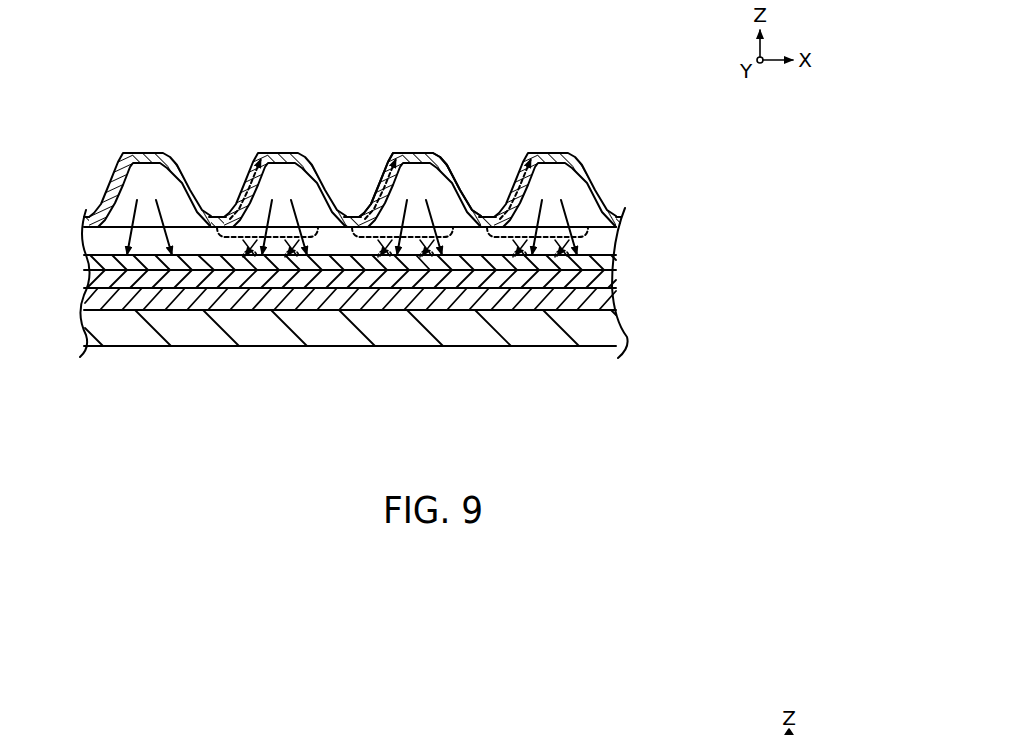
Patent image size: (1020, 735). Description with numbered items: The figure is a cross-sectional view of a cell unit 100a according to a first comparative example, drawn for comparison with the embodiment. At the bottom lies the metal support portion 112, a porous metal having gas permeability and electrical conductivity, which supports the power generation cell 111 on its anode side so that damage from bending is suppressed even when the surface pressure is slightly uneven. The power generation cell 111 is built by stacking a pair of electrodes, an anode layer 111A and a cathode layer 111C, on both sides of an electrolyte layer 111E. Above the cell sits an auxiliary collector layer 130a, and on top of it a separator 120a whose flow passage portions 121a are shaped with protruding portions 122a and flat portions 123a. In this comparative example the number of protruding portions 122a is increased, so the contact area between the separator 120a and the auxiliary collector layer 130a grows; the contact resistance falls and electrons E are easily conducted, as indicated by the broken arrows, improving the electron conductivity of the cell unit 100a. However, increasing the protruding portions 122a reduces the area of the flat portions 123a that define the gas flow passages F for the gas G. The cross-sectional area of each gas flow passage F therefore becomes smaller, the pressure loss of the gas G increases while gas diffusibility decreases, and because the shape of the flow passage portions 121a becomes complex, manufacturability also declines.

The cell unit 100a is at (97, 30).
The separator 120a is at (593, 200).
The flow passage portion 121a is at (441, 151).
The protruding portion 122a is at (485, 228).
The flat portion 123a is at (555, 152).
The auxiliary collector layer 130a is at (615, 241).
The power generation cell 111 is at (715, 255).
The cathode layer 111C is at (612, 262).
The electrolyte layer 111E is at (612, 283).
The anode layer 111A is at (612, 304).
The metal support portion 112 is at (614, 332).
The gas G is at (567, 205).
The electrons E is at (515, 190).
The gas flow passage F is at (561, 197).